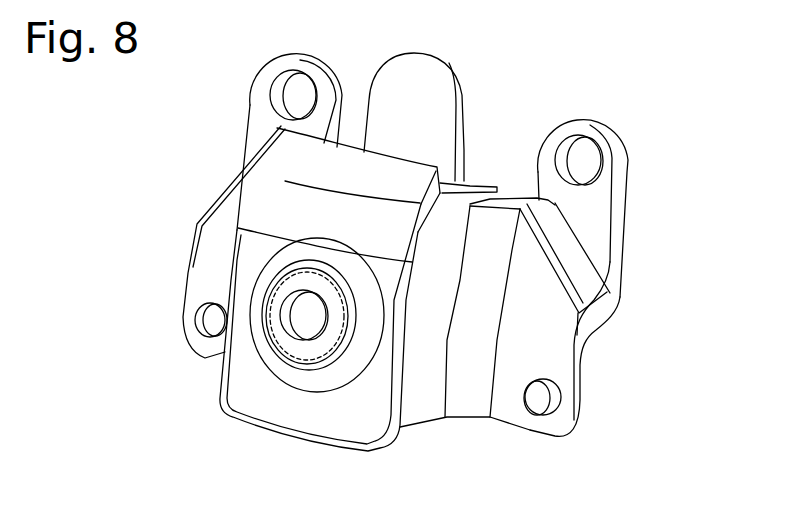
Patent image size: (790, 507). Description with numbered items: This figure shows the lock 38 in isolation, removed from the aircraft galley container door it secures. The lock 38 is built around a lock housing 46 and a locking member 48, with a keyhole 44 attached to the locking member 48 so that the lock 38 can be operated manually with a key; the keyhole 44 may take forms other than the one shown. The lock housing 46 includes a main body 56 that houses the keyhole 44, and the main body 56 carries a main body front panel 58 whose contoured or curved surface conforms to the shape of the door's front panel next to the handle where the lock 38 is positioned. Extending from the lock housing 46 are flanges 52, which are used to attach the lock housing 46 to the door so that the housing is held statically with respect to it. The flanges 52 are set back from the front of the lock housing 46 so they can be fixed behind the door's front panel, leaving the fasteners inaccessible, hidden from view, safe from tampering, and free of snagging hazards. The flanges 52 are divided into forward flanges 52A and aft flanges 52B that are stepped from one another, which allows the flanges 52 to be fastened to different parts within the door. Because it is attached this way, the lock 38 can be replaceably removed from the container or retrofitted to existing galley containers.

The lock 38 is at (578, 44).
The keyhole 44 is at (297, 328).
The lock housing 46 is at (427, 397).
The locking member 48 is at (430, 74).
The flanges 52 is at (597, 260).
The forward flanges 52A is at (205, 263).
The aft flanges 52B is at (257, 122).
The main body 56 is at (317, 420).
The main body front panel 58 is at (277, 185).